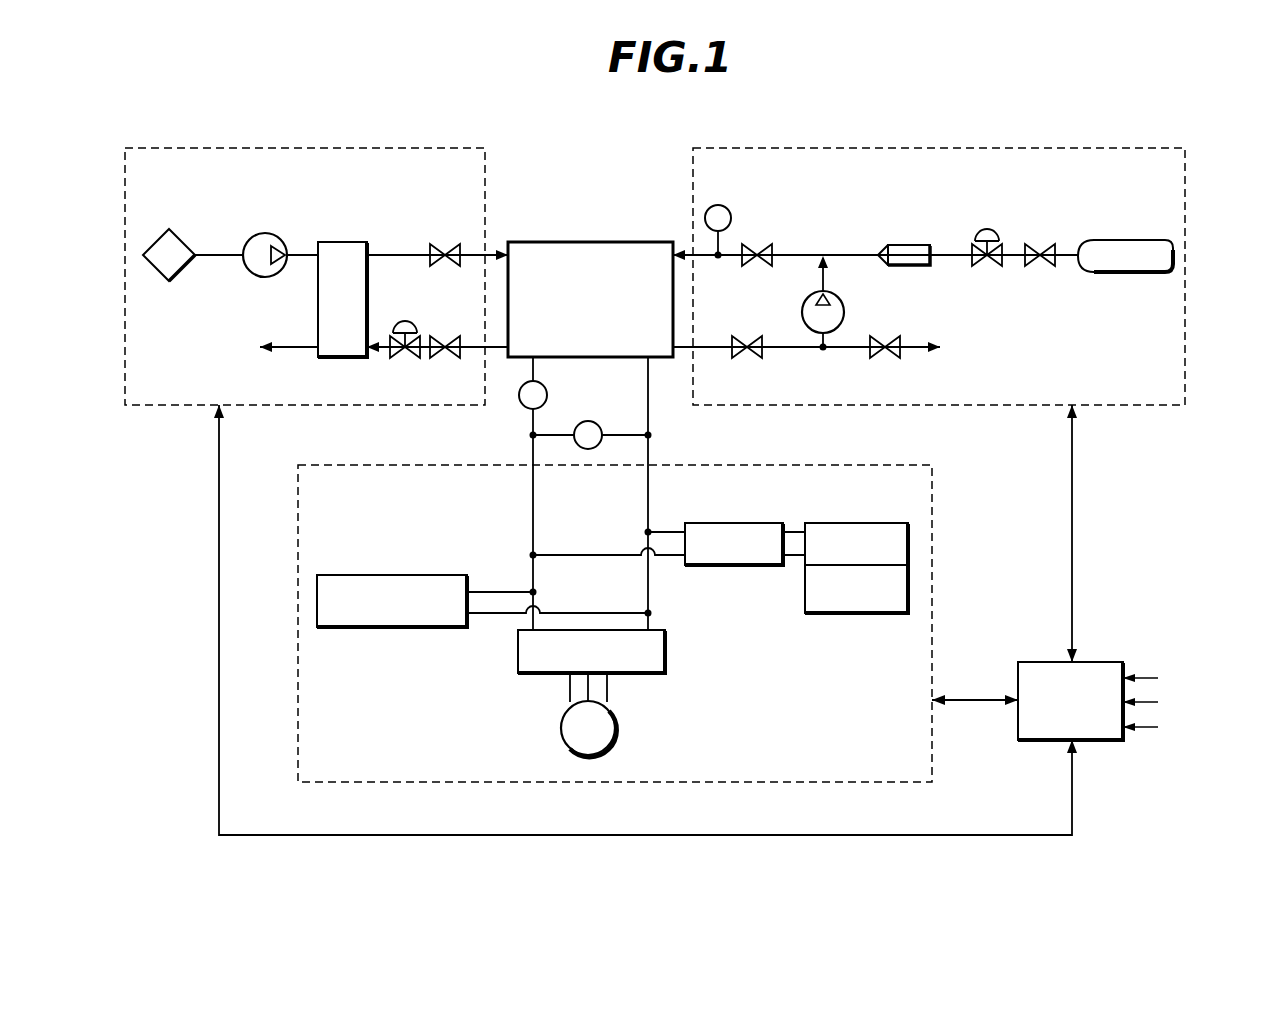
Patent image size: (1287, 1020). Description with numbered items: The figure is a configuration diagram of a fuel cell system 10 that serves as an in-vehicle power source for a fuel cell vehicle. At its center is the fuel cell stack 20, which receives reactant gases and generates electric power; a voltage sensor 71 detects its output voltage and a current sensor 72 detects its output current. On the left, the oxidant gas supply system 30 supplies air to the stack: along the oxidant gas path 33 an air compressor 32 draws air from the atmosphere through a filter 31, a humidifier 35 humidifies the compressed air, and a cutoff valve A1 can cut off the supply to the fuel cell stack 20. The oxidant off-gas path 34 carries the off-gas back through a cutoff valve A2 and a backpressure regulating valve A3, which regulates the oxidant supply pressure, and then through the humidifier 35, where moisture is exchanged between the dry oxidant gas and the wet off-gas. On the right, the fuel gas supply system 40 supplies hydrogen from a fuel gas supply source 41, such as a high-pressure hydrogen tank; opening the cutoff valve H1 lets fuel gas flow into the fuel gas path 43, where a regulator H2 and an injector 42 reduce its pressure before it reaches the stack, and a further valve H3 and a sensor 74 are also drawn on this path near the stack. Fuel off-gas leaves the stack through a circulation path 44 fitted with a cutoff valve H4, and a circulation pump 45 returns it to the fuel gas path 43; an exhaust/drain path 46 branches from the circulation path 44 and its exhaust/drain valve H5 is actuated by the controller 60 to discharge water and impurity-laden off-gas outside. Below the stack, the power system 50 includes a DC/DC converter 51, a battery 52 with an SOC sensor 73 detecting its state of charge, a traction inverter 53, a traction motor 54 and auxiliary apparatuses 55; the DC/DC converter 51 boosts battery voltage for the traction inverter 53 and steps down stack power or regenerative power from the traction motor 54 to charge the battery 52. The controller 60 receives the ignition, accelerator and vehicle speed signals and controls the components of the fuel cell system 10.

The fuel cell system 10 is at (1166, 121).
The fuel cell stack 20 is at (590, 242).
The oxidant gas supply system 30 is at (272, 148).
The filter 31 is at (184, 239).
The air compressor 32 is at (258, 234).
The oxidant gas path 33 is at (386, 254).
The oxidant off-gas path 34 is at (471, 347).
The humidifier 35 is at (340, 242).
The cutoff valve A1 is at (444, 243).
The cutoff valve A2 is at (443, 359).
The backpressure regulating valve A3 is at (405, 321).
The fuel gas supply system 40 is at (1020, 148).
The fuel gas supply source 41 is at (1121, 240).
The injector 42 is at (906, 245).
The fuel gas path 43 is at (801, 255).
The circulation path 44 is at (791, 347).
The circulation pump 45 is at (845, 318).
The exhaust/drain path 46 is at (911, 347).
The cutoff valve H1 is at (1047, 243).
The regulator H2 is at (988, 229).
The hydrogen supply valve H3 is at (764, 243).
The cutoff valve H4 is at (744, 359).
The exhaust/drain valve H5 is at (880, 359).
The power system 50 is at (932, 537).
The DC/DC converter 51 is at (732, 523).
The battery 52 is at (848, 523).
The traction inverter 53 is at (665, 656).
The traction motor 54 is at (615, 722).
The auxiliary apparatuses 55 is at (410, 575).
The controller 60 is at (1096, 662).
The voltage sensor 71 is at (592, 422).
The current sensor 72 is at (521, 403).
The SOC sensor 73 is at (838, 614).
The pressure sensor 74 is at (721, 205).